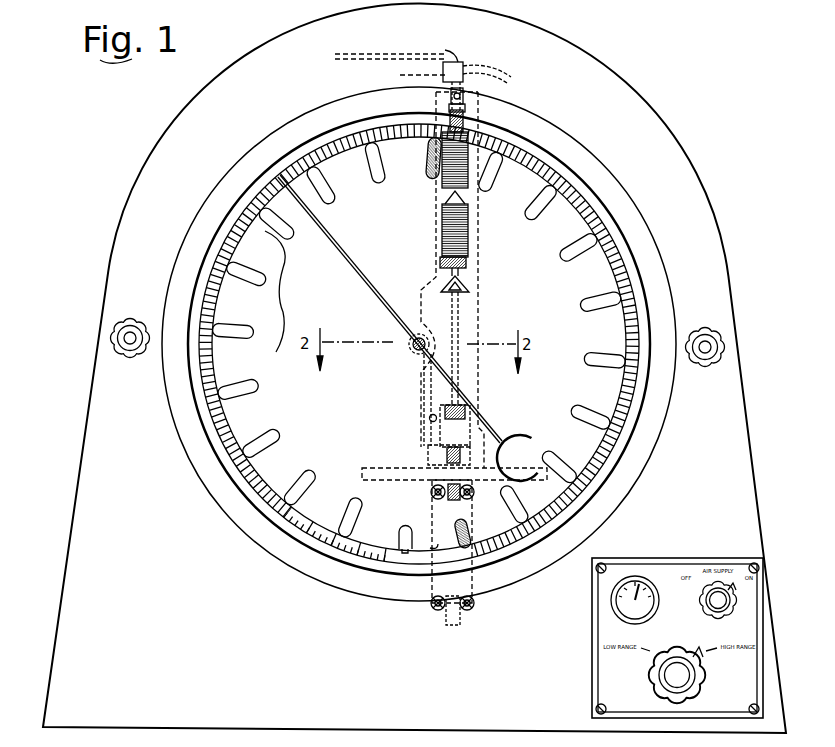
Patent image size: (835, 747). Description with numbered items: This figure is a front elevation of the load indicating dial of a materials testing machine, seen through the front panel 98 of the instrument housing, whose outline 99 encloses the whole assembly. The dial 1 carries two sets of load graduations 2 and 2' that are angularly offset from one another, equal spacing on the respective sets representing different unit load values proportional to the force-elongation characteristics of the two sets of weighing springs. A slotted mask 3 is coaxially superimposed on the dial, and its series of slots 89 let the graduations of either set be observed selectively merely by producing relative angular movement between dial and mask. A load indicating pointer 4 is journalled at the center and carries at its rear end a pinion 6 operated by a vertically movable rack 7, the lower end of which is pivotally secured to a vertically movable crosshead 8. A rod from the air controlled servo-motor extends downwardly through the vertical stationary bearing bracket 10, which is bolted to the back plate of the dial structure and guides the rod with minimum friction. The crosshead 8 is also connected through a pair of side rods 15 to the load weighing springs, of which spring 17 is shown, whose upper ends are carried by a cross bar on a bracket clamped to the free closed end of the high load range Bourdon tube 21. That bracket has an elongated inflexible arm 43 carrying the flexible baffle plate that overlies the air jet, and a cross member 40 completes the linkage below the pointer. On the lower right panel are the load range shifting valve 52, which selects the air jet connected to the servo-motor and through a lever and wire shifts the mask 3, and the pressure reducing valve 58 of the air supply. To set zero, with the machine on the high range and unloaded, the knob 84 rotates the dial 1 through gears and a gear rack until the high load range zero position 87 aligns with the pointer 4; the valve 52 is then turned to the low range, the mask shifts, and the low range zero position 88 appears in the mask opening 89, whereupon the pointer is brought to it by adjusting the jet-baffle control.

The dial 1 is at (254, 188).
The load graduations 2 is at (419, 338).
The load graduations 2' is at (302, 387).
The slotted mask 3 is at (273, 343).
The load indicating pointer 4 is at (359, 267).
The pinion 6 is at (411, 339).
The rack 7 is at (421, 379).
The crosshead 8 is at (438, 449).
The bearing bracket 10 is at (472, 583).
The side rods 15 is at (458, 327).
The spring 17 is at (470, 255).
The high load range Bourdon tube 21 is at (501, 73).
The cross bracket 40 is at (405, 469).
The arm 43 is at (392, 44).
The load range shifting valve 52 is at (657, 688).
The valve 58 is at (702, 617).
The knob 84 is at (707, 328).
The high load range zero position 87 is at (396, 523).
The low load range zero position 88 is at (437, 545).
The slots 89 is at (270, 438).
The front panel 98 is at (133, 319).
The housing 99 is at (97, 447).